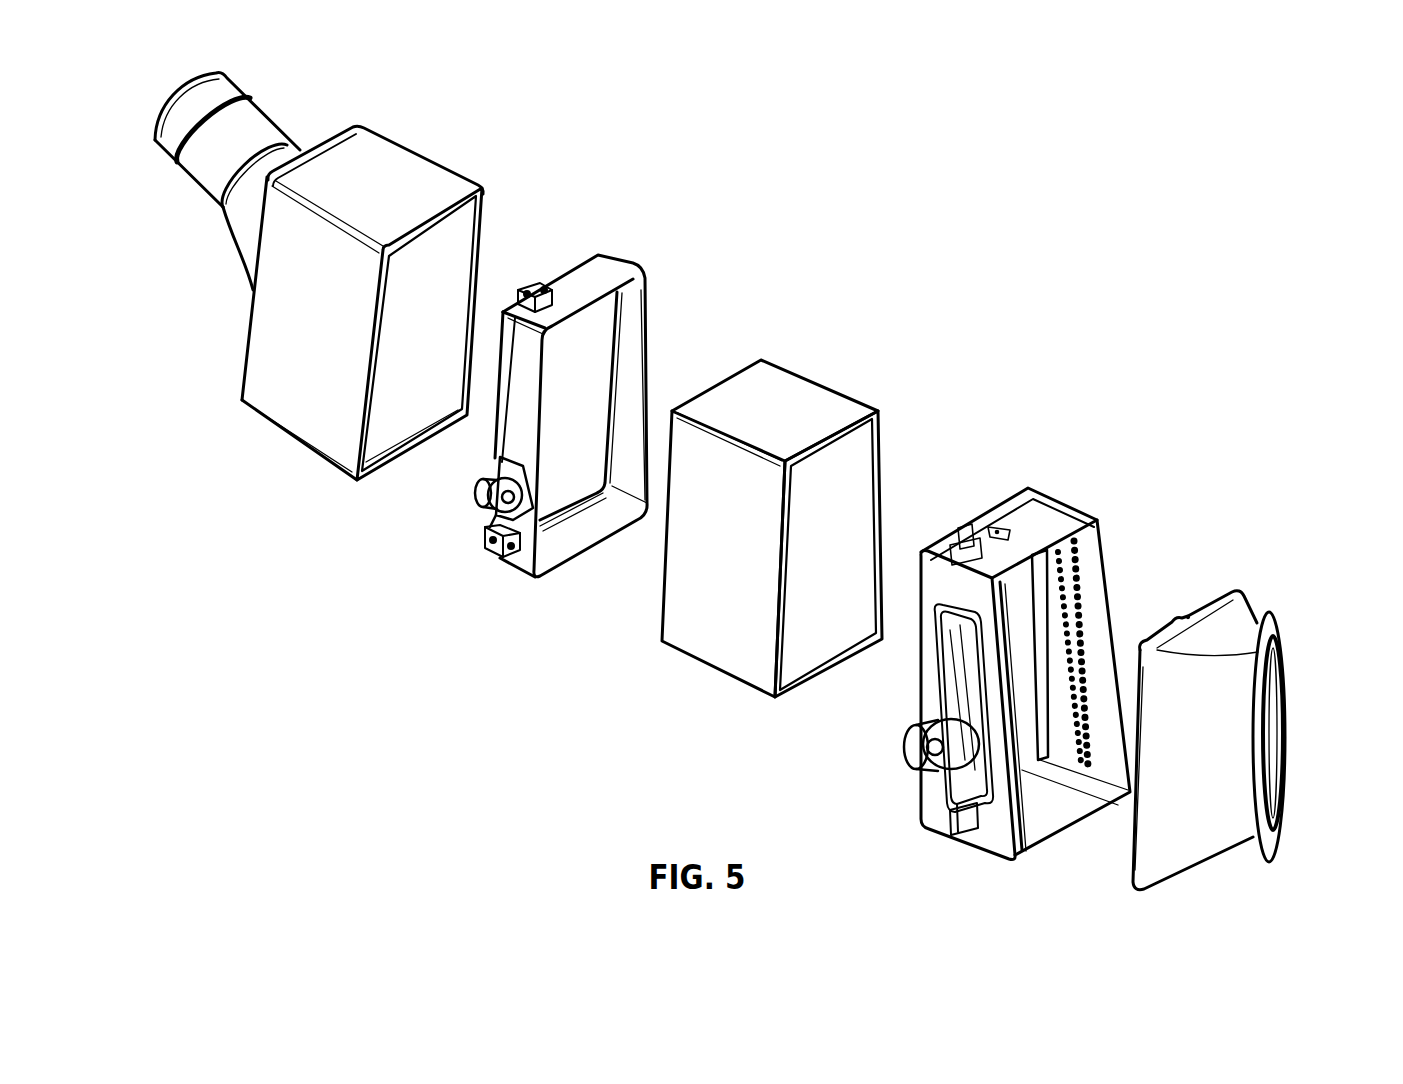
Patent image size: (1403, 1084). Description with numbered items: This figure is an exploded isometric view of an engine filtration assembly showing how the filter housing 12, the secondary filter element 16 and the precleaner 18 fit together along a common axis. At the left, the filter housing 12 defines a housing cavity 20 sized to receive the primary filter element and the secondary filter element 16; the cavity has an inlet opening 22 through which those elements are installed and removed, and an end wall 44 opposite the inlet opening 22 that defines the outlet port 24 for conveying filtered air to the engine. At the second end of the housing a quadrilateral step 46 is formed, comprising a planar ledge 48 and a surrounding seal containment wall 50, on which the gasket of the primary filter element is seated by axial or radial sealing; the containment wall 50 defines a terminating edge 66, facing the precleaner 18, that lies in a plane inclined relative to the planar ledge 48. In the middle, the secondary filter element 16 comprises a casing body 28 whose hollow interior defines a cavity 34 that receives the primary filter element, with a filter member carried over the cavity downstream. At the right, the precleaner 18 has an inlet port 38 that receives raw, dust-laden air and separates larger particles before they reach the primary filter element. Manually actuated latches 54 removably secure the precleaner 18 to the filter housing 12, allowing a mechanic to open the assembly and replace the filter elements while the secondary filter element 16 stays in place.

The filter housing 12 is at (220, 392).
The secondary filter element 16 is at (821, 692).
The precleaner 18 is at (1322, 648).
The housing cavity 20 is at (465, 243).
The inlet opening 22 is at (440, 242).
The outlet port 24 is at (195, 171).
The casing body 28 is at (815, 380).
The cavity 34 is at (848, 473).
The inlet port 38 is at (1277, 714).
The end wall 44 is at (248, 318).
The quadrilateral step 46 is at (622, 333).
The planar ledge 48 is at (617, 392).
The seal containment wall 50 is at (637, 398).
The manually actuated latches 54 is at (537, 283).
The terminating edge 66 is at (567, 565).